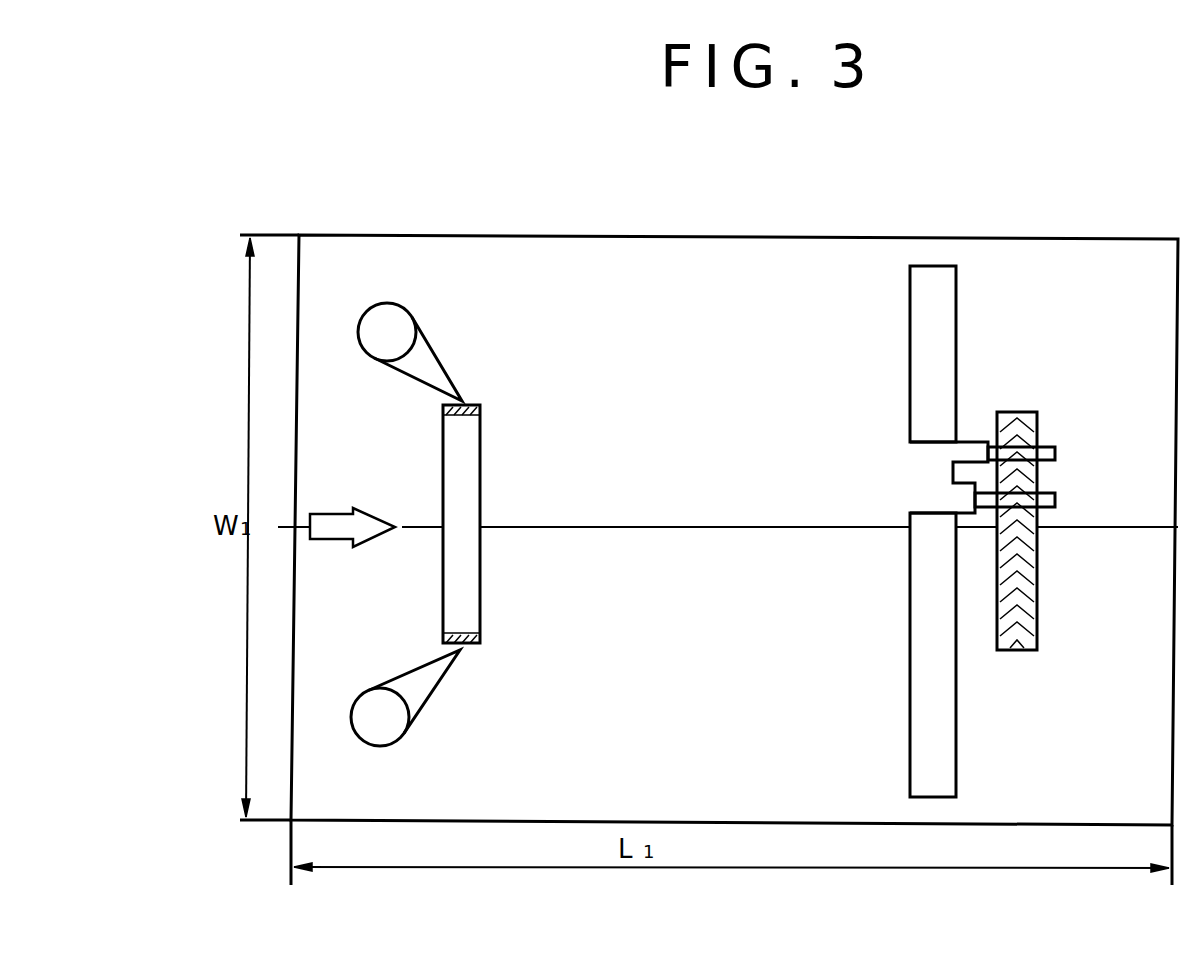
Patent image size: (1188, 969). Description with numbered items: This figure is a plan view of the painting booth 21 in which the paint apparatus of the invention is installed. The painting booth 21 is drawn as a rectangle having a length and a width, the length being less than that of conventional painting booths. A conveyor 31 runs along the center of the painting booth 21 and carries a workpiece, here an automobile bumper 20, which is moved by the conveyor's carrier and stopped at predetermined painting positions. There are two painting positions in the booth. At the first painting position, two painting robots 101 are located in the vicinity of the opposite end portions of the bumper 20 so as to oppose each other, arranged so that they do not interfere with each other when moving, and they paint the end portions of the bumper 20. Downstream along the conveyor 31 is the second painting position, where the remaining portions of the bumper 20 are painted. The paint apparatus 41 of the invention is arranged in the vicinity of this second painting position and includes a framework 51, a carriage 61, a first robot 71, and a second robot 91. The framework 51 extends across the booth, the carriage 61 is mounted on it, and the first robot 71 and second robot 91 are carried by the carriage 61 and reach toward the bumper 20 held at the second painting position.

The automobile bumper 20 is at (480, 605).
The painting booth 21 is at (532, 235).
The conveyor 31 is at (553, 528).
The paint apparatus 41 is at (956, 362).
The framework 51 is at (908, 757).
The carriage 61 is at (908, 459).
The first robot 71 is at (1010, 500).
The second robot 91 is at (990, 453).
The painting robots 101 is at (418, 318).